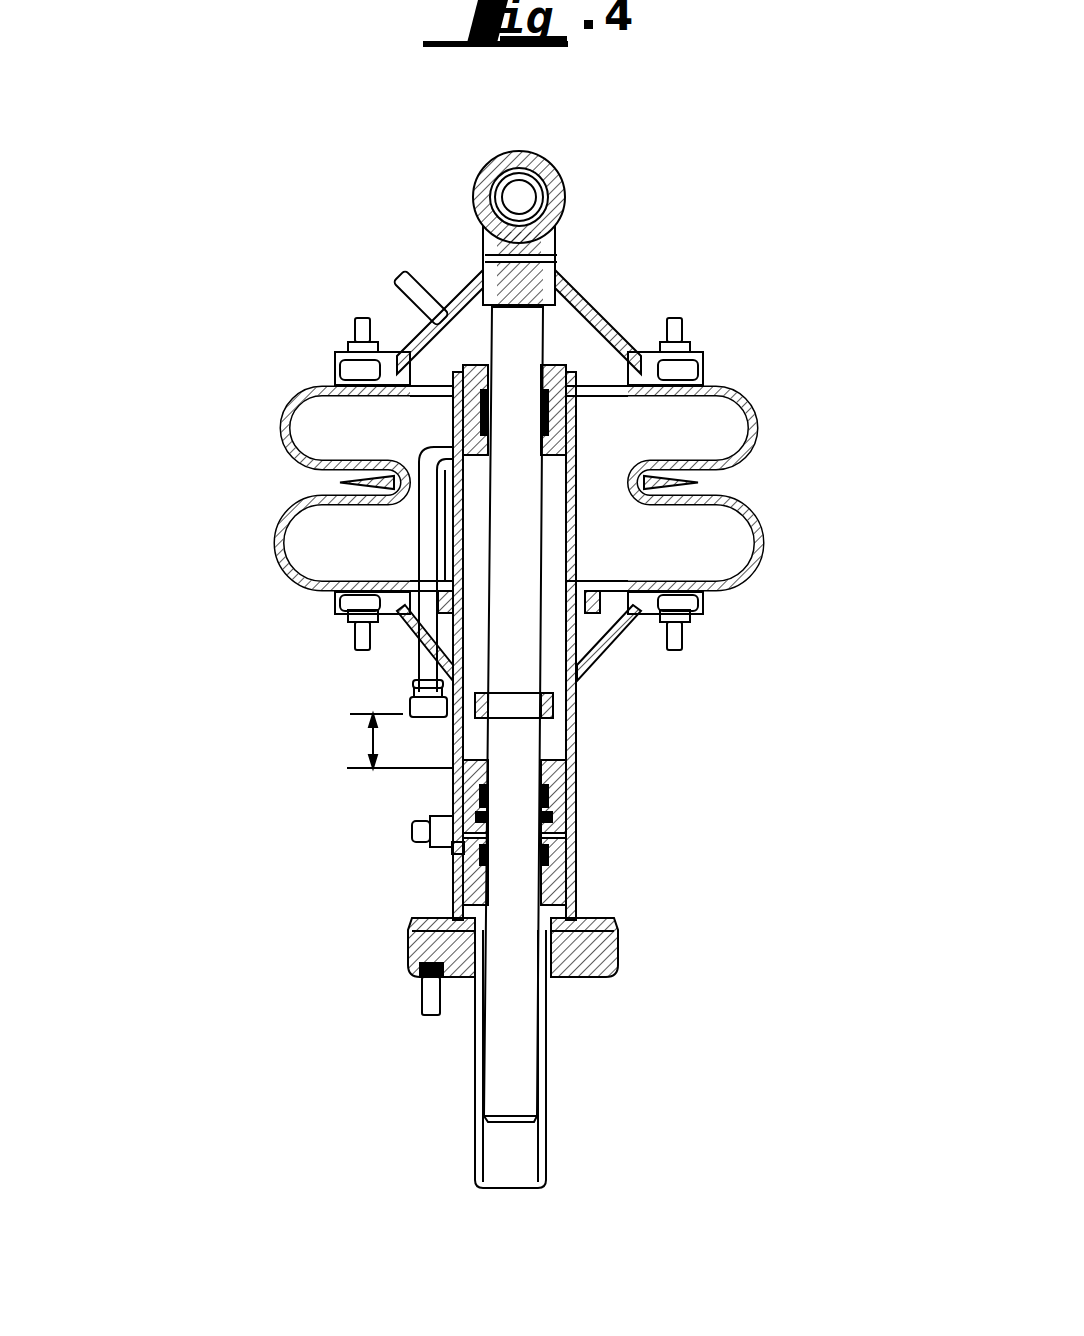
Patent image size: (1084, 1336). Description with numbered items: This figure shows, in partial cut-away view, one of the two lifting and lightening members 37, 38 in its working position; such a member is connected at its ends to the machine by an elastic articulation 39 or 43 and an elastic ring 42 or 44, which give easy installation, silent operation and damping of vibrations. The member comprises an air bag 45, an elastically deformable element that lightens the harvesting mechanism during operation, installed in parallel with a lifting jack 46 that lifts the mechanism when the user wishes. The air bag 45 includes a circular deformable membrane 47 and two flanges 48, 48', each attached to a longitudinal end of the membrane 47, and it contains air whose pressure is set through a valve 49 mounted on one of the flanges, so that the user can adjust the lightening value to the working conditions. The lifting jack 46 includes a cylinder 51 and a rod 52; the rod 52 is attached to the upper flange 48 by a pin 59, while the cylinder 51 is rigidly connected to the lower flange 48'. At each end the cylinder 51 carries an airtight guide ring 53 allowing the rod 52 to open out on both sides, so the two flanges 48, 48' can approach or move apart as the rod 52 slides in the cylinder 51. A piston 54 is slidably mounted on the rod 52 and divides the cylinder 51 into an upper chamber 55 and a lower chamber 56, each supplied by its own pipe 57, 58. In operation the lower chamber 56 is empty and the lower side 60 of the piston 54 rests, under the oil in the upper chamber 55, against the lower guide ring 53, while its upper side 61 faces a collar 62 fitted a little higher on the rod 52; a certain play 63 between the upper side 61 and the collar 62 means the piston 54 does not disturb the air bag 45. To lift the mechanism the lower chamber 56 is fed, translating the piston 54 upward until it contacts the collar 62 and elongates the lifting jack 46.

The first lifting and lightening member 37 is at (330, 355).
The second lifting and lightening member 38 is at (519, 482).
The elastic articulation 39 is at (613, 973).
The elastic ring 42 is at (557, 172).
The elastic articulation 43 is at (431, 989).
The elastic ring 44 is at (519, 197).
The air bag 45 is at (760, 385).
The lifting jack 46 is at (580, 895).
The circular deformable membrane 47 is at (736, 452).
The upper flange 48 is at (551, 326).
The lower flange 48' is at (570, 631).
The valve 49 is at (406, 276).
The cylinder 51 is at (576, 527).
The rod 52 is at (545, 318).
The airtight guide ring 53 is at (464, 425).
The piston 54 is at (562, 820).
The upper chamber 55 is at (472, 553).
The lower chamber 56 is at (452, 848).
The pipe 57 is at (420, 690).
The pipe 58 is at (413, 826).
The pin 59 is at (490, 257).
The lower side of the piston 60 is at (575, 833).
The upper side of the piston 61 is at (575, 752).
The collar 62 is at (576, 698).
The play 63 is at (371, 742).